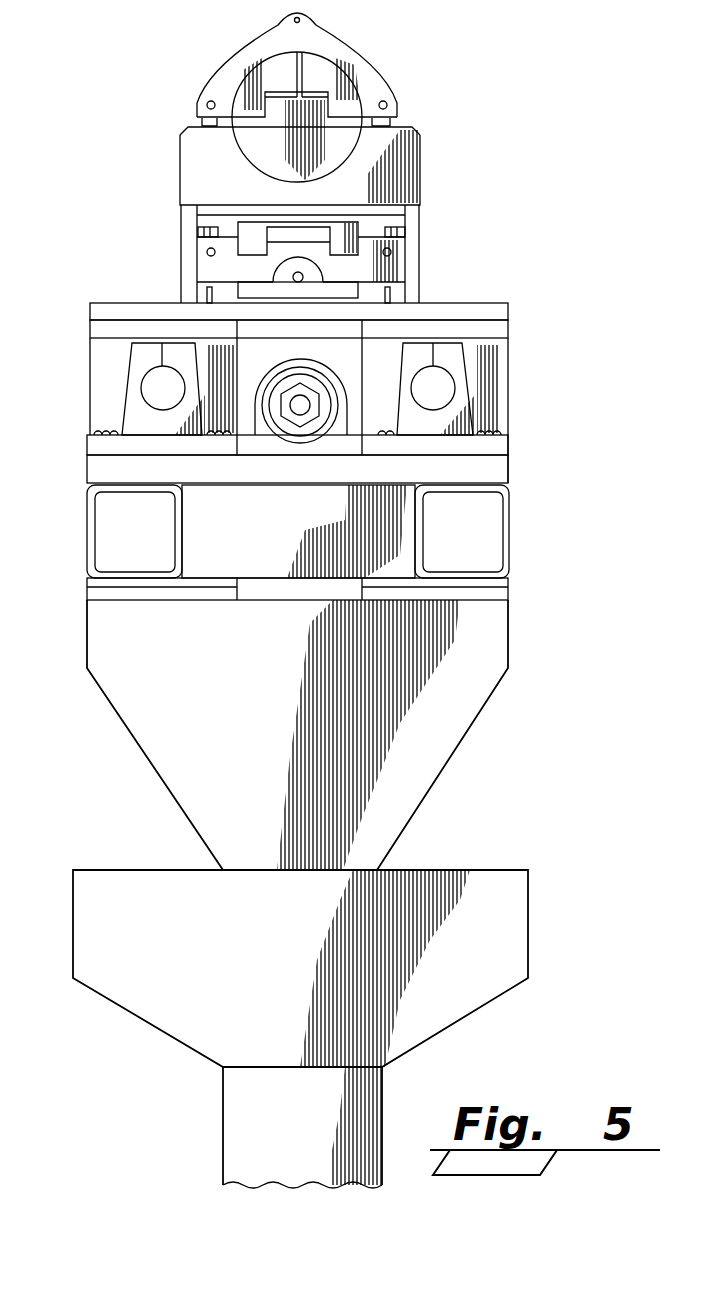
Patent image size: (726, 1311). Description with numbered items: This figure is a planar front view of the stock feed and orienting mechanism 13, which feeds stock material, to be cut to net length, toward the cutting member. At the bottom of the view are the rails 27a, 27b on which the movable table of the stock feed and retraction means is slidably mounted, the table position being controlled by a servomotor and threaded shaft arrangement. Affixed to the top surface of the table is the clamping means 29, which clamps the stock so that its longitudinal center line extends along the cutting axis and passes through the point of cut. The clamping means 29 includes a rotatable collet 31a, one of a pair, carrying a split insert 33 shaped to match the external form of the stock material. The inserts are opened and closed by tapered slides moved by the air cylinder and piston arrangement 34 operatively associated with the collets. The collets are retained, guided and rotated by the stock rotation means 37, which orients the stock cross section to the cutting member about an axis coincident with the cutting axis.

The stock feed and orienting mechanism 13 is at (198, 28).
The rotatable collet 31a is at (353, 50).
The split insert 33 is at (347, 100).
The clamping means 29 is at (185, 125).
The stock rotation means 37 is at (160, 160).
The air cylinder and piston arrangement 34 is at (210, 263).
The rail 27a is at (141, 386).
The rail 27b is at (455, 388).